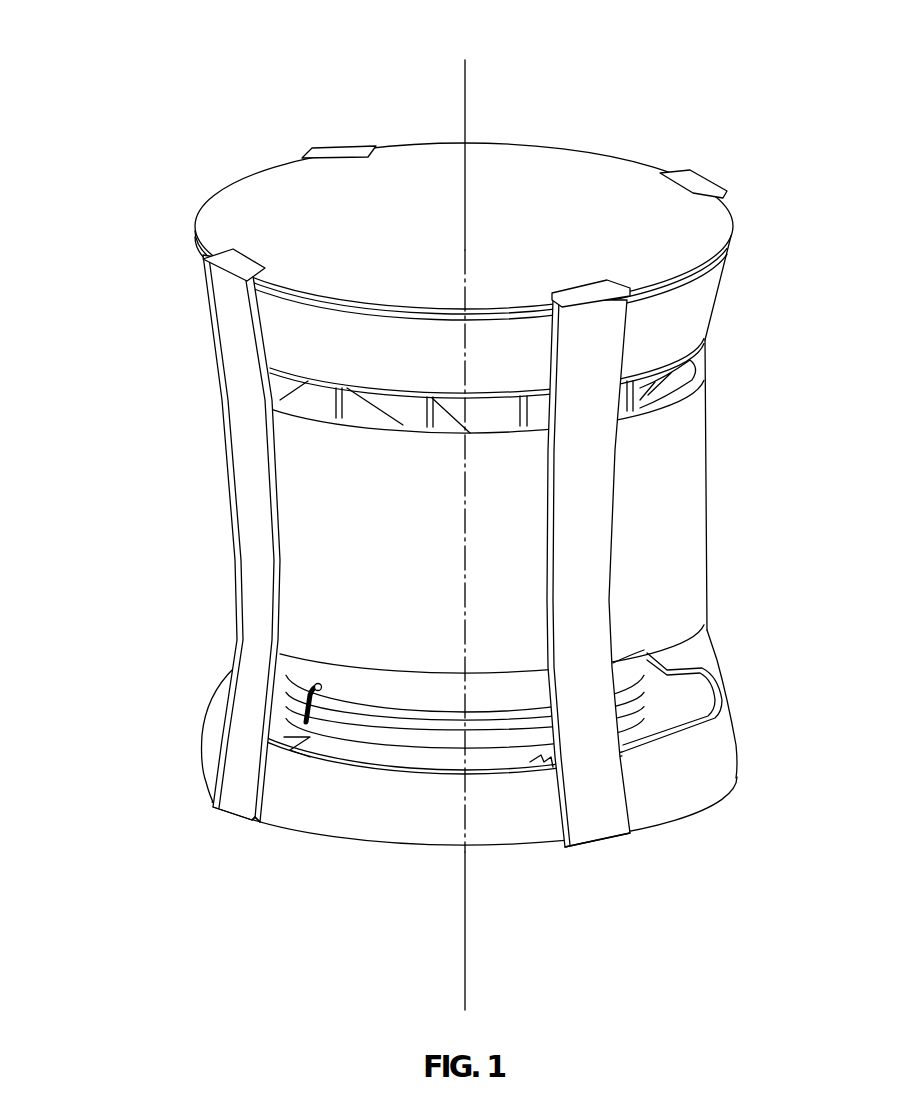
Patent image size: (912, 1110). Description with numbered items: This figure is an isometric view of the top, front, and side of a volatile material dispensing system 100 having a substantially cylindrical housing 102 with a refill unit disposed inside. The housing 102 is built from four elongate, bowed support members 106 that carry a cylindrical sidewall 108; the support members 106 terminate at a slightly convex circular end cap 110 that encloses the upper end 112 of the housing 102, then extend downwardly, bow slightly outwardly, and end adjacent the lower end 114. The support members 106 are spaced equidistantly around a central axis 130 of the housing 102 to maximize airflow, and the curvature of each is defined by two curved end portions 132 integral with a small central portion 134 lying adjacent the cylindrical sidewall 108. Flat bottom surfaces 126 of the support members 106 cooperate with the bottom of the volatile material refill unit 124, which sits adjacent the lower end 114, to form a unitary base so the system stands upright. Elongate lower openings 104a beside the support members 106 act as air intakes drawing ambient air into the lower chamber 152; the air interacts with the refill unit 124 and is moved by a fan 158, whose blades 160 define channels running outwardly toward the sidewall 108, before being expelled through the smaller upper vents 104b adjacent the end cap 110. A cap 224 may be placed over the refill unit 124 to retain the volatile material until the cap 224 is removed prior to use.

The volatile material dispensing system 100 is at (443, 512).
The housing 102 is at (704, 296).
The elongate lower openings 104a is at (690, 698).
The upper vents 104b is at (412, 416).
The support members 106 is at (346, 148).
The cylindrical sidewall 108 is at (686, 567).
The end cap 110 is at (596, 160).
The upper end 112 is at (731, 243).
The lower end 114 is at (622, 838).
The volatile material refill unit 124 is at (624, 666).
The bottom surfaces 126 is at (233, 814).
The central axis 130 is at (467, 100).
The curved end portions 132 is at (216, 277).
The central portion 134 is at (258, 530).
The lower chamber 152 is at (300, 668).
The fan 158 is at (637, 387).
The blades 160 is at (346, 414).
The cap 224 is at (395, 696).